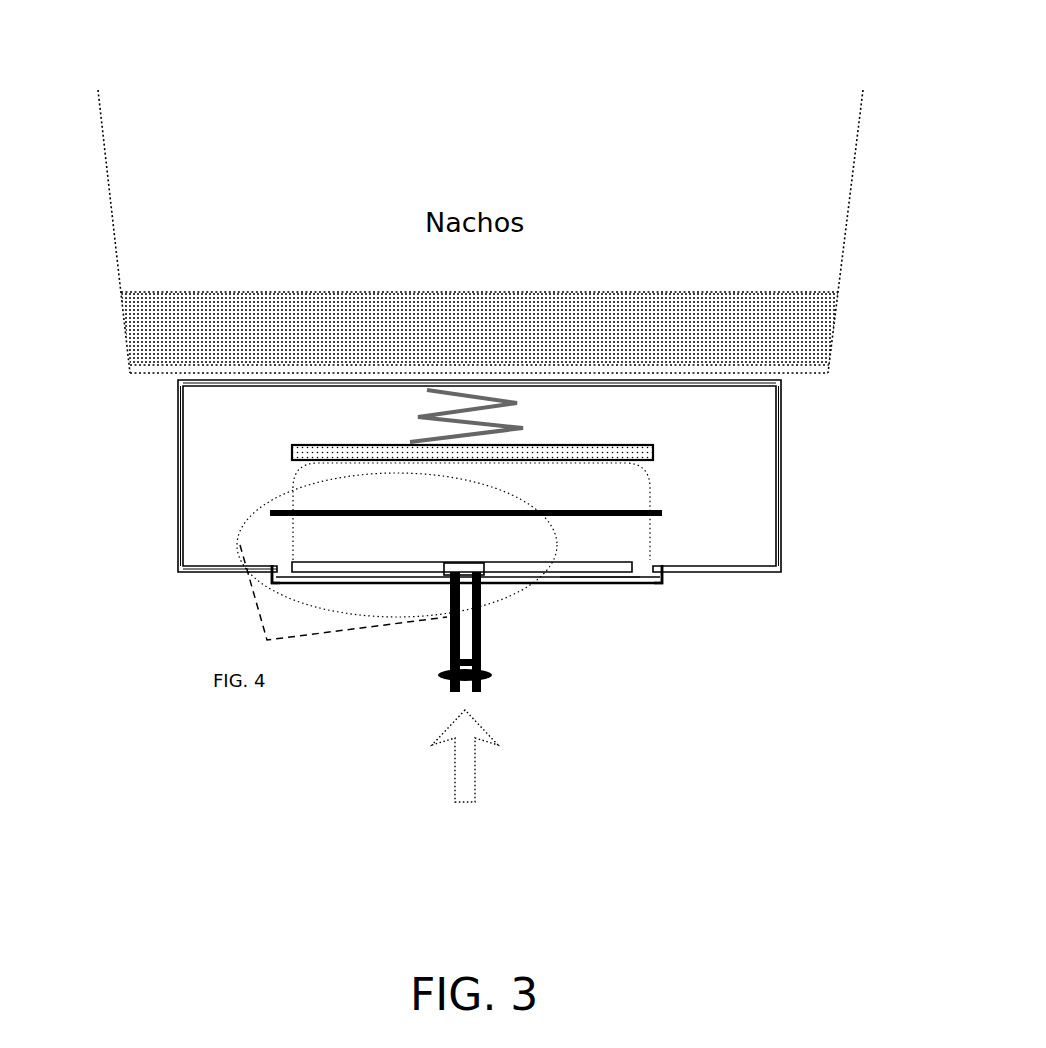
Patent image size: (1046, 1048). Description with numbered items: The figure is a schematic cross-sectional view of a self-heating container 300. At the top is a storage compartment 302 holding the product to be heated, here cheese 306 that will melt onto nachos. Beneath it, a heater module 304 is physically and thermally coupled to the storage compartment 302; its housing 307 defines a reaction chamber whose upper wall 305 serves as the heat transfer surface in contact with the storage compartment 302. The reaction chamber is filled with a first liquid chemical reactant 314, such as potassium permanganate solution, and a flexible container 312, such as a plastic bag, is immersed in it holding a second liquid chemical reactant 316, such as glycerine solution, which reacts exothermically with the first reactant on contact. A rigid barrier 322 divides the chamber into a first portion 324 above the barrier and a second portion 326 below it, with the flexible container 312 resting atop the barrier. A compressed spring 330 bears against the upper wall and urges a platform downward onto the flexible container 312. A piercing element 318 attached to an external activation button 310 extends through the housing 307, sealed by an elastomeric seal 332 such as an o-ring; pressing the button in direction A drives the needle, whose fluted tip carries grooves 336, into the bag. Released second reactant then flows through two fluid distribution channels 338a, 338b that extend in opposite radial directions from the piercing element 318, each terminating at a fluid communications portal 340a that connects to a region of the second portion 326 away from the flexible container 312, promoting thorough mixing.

The container 300 is at (255, 108).
The storage compartment 302 is at (98, 188).
The cheese 306 is at (190, 330).
The spring 330 is at (418, 408).
The piercing element 318 is at (463, 565).
The first liquid chemical reactant 314 is at (753, 422).
The heater module 304 is at (178, 428).
The housing top wall 305 is at (262, 382).
The second liquid chemical reactant 316 is at (623, 488).
The flexible container 312 is at (645, 527).
The first portion of the reaction chamber 324 is at (235, 475).
The housing 307 is at (780, 548).
The fluid communications portal 340a is at (270, 568).
The grooves 336 is at (482, 580).
The rigid barrier 322 is at (602, 565).
The elastomeric seal 332 is at (483, 597).
The second portion of the reaction chamber 326 is at (425, 573).
The fluid distribution channel 338a is at (355, 585).
The fluid distribution channel 338b is at (638, 580).
The activation button 310 is at (510, 688).